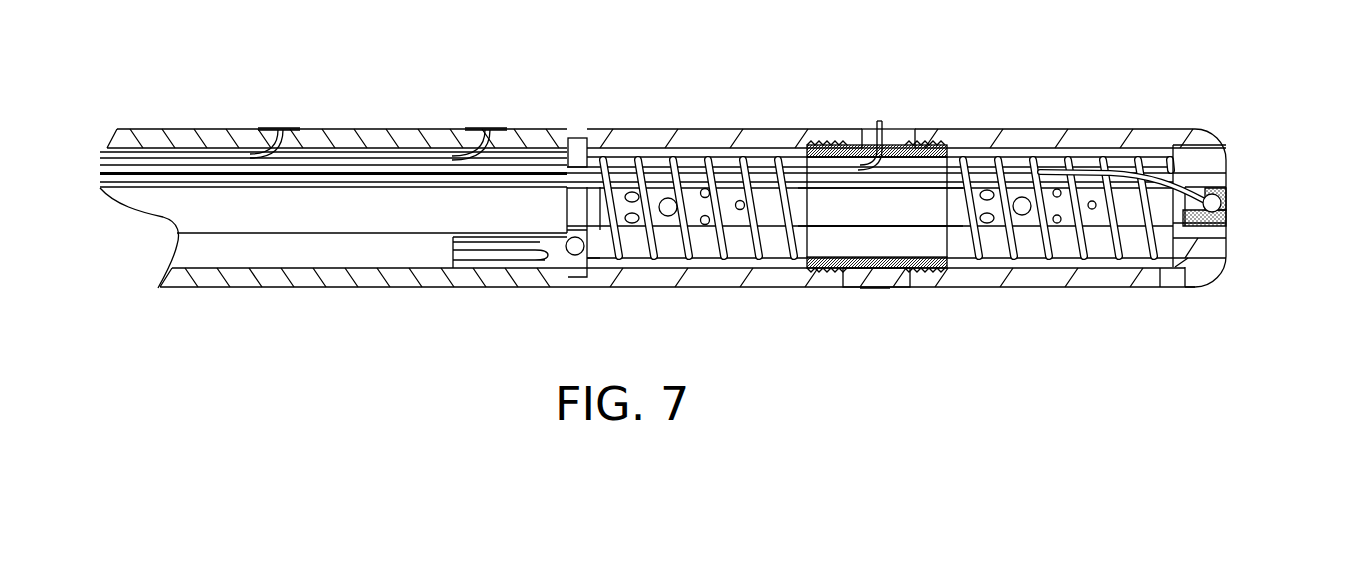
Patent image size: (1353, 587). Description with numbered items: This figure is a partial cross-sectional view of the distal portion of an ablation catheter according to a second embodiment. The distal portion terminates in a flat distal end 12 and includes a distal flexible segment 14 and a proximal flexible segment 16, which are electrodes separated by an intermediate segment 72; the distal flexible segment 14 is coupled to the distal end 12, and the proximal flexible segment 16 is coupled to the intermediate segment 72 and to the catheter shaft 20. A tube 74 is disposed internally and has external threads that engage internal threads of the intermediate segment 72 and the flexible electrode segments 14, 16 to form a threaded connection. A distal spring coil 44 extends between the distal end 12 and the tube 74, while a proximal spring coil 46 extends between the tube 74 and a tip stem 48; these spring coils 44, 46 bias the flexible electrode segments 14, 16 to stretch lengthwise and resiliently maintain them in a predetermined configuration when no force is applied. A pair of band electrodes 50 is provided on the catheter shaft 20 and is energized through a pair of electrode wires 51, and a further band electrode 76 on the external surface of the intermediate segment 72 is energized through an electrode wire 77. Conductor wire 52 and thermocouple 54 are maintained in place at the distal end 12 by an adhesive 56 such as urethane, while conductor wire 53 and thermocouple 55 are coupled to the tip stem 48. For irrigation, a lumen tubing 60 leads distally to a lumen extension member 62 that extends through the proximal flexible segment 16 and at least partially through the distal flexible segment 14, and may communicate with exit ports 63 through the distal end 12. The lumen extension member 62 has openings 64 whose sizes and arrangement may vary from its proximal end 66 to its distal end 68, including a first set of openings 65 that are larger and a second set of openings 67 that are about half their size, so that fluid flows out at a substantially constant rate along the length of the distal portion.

The distal end 12 is at (1214, 127).
The distal flexible segment 14 is at (1010, 135).
The proximal flexible segment 16 is at (672, 135).
The catheter shaft 20 is at (213, 132).
The distal spring coil 44 is at (1101, 154).
The proximal spring coil 46 is at (790, 205).
The tip stem 48 is at (570, 157).
The band electrodes 50 is at (268, 135).
The electrode wires 51 is at (245, 158).
The conductor wire 52 is at (1193, 197).
The conductor wire 53 is at (507, 260).
The thermocouple 54 is at (1220, 200).
The thermocouple 55 is at (573, 252).
The adhesive 56 is at (1234, 221).
The lumen tubing 60 is at (445, 210).
The lumen extension member 62 is at (867, 200).
The exit ports 63 is at (1215, 155).
The openings 64 is at (695, 195).
The first set of openings 65 is at (636, 222).
The proximal end 66 is at (582, 209).
The second set of openings 67 is at (704, 224).
The distal end 68 is at (1123, 207).
The intermediate segment 72 is at (890, 288).
The tube 74 is at (818, 273).
The band electrode 76 is at (876, 125).
The electrode wire 77 is at (885, 137).